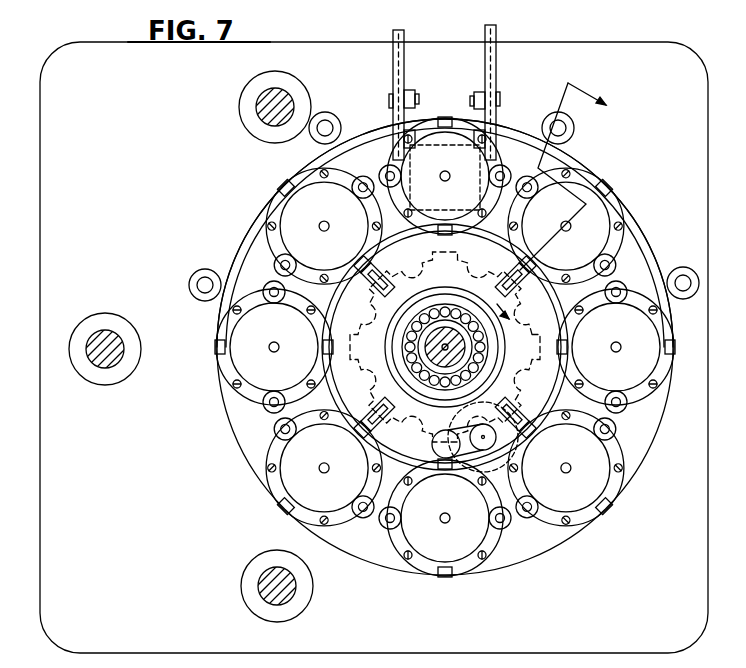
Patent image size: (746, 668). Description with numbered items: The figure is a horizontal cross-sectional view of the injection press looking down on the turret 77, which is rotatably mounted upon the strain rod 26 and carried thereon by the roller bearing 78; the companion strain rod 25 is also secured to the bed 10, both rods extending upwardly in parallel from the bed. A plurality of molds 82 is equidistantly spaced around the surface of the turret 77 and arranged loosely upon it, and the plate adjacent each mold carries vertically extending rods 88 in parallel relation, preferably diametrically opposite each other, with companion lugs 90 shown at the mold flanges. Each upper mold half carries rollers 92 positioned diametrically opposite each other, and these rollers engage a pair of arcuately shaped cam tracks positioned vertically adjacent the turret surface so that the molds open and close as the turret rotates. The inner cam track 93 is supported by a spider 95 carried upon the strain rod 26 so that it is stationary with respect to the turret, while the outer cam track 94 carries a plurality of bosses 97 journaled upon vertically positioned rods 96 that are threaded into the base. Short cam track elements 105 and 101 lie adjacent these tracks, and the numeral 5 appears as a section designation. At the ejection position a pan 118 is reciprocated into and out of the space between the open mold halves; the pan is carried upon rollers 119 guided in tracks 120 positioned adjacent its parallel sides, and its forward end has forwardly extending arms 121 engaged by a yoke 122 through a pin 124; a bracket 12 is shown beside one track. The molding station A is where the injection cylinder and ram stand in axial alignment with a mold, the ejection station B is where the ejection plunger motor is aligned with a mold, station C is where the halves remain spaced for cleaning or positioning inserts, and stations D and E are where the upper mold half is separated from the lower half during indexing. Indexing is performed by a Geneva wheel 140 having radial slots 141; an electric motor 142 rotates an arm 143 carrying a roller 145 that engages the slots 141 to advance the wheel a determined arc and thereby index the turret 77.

The bed 10 is at (50, 612).
The bracket 12 is at (478, 92).
The strain rod 25 is at (106, 362).
The strain rod 26 is at (445, 340).
The turret 77 is at (248, 442).
The roller bearing 78 is at (458, 312).
The mold 82 is at (432, 545).
The rod 88 is at (366, 512).
The lug 90 is at (394, 524).
The roller 92 is at (447, 572).
The inner cam track 93 is at (478, 236).
The outer cam track 94 is at (592, 168).
The spider 95 is at (368, 288).
The rod 96 is at (568, 128).
The boss 97 is at (684, 268).
The index plate 101 is at (598, 178).
The ring segment 105 is at (254, 228).
The pan 118 is at (416, 196).
The roller 119 is at (500, 98).
The track 120 is at (497, 64).
The arm 121 is at (392, 108).
The yoke 122 is at (412, 94).
The pin 124 is at (404, 144).
The Geneva wheel 140 is at (334, 372).
The radial slot 141 is at (520, 334).
The electric motor 142 is at (520, 452).
The arm 143 is at (472, 426).
The roller 145 is at (440, 445).
The section line 5 is at (560, 209).
The molding station A is at (248, 350).
The ejection station B is at (430, 148).
The station C is at (298, 208).
The station D is at (650, 361).
The station E is at (600, 214).